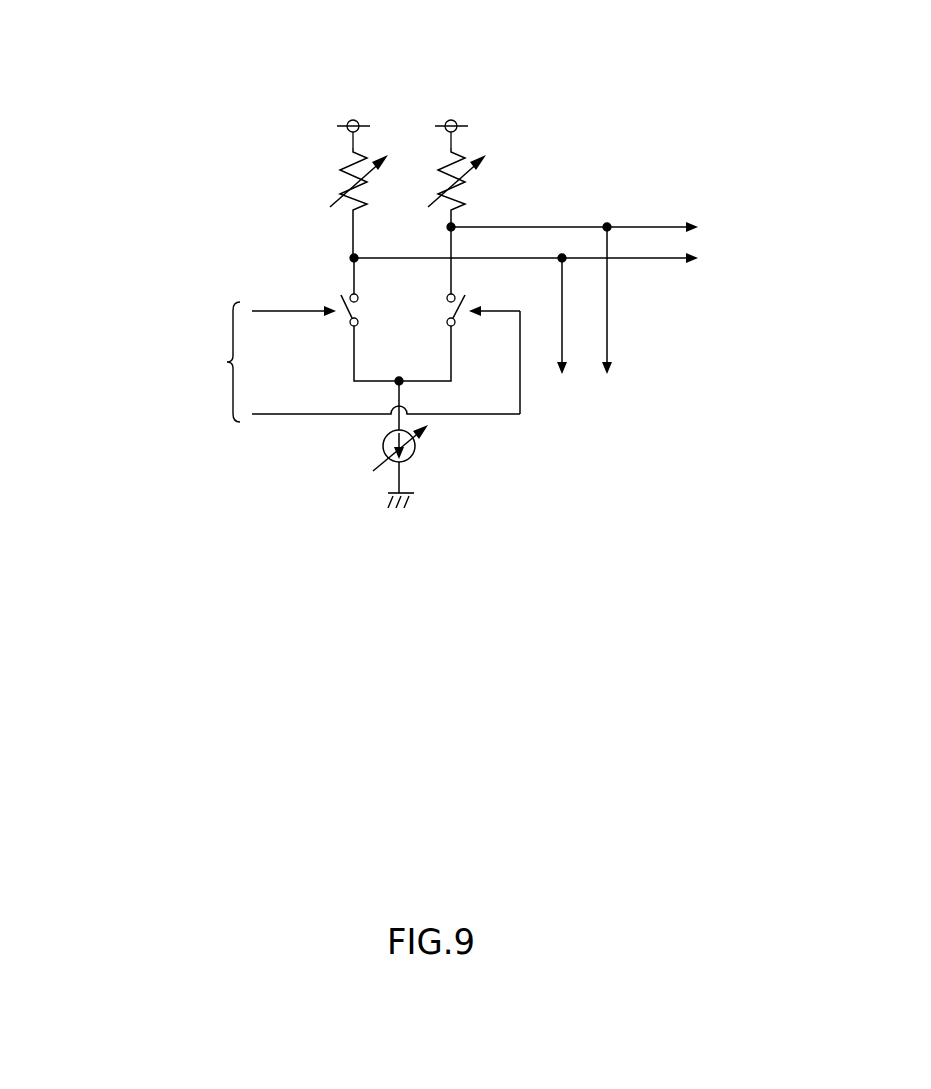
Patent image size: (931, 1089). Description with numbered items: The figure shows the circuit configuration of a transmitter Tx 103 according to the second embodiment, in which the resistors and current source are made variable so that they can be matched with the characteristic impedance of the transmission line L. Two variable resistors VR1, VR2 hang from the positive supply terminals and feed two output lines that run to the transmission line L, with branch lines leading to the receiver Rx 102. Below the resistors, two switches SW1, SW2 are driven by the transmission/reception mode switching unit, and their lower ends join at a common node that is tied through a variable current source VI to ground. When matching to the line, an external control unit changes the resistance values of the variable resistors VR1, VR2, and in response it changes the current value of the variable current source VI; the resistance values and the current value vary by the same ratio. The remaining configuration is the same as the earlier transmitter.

The transmitter Tx 103 is at (272, 44).
The receiver Rx 102 is at (622, 313).
The variable resistor VR1 is at (342, 203).
The variable resistor VR2 is at (440, 187).
The switch SW1 is at (305, 300).
The switch SW2 is at (483, 300).
The variable current source VI is at (406, 448).